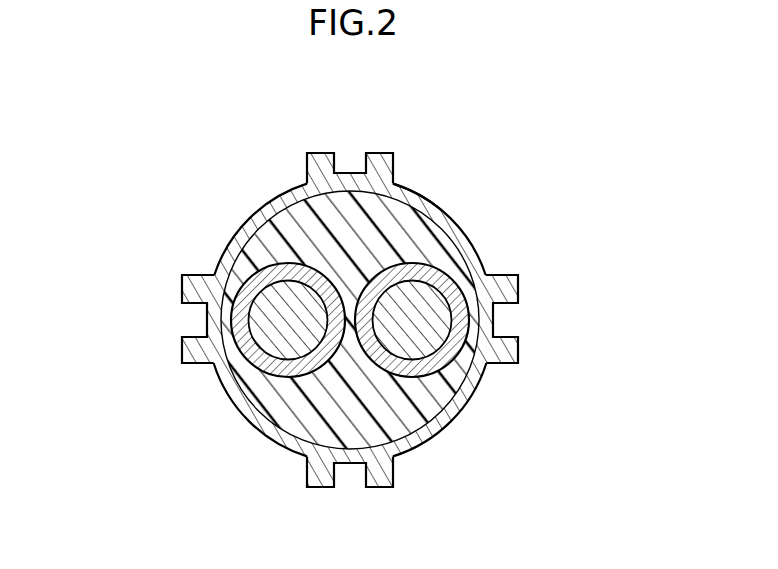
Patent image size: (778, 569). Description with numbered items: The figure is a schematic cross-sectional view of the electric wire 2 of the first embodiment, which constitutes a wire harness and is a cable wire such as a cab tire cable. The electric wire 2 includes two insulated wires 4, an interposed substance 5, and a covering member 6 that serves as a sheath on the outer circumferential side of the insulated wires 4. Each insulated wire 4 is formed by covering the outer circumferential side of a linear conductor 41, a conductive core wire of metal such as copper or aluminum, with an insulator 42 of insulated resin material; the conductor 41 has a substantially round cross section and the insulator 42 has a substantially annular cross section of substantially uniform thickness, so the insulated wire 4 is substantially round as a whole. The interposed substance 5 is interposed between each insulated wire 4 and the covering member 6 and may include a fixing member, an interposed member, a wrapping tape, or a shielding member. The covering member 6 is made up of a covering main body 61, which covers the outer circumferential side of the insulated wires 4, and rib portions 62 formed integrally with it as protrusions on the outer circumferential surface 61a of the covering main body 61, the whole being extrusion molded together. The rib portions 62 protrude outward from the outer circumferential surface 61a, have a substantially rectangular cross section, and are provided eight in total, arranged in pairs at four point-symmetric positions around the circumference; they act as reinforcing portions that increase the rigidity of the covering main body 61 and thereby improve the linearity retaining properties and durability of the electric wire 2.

The electric wire 2 is at (99, 483).
The insulated wire 4 is at (126, 183).
The conductor 41 is at (262, 291).
The insulator 42 is at (266, 262).
The interposed substance 5 is at (297, 403).
The covering member 6 is at (126, 325).
The covering main body 61 is at (223, 369).
The outer circumferential surface 61a is at (411, 190).
The rib portion 62 is at (378, 152).